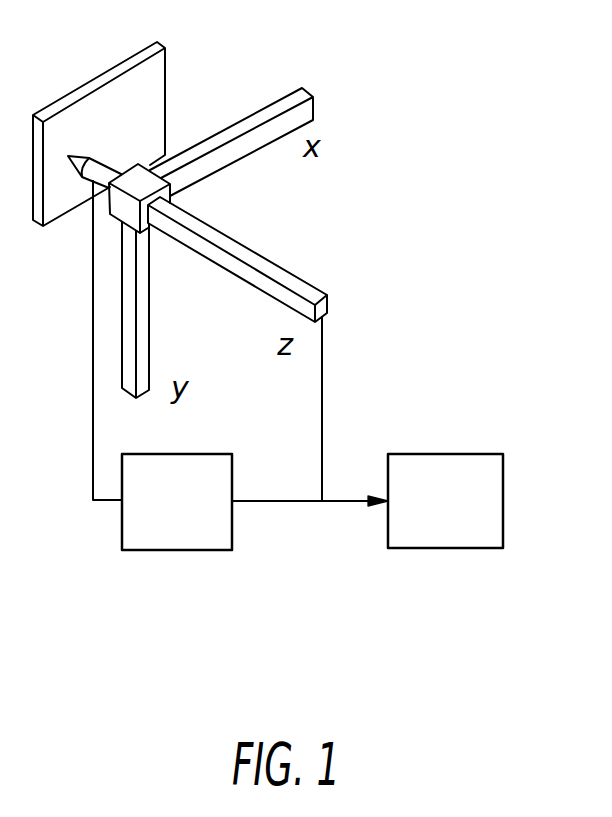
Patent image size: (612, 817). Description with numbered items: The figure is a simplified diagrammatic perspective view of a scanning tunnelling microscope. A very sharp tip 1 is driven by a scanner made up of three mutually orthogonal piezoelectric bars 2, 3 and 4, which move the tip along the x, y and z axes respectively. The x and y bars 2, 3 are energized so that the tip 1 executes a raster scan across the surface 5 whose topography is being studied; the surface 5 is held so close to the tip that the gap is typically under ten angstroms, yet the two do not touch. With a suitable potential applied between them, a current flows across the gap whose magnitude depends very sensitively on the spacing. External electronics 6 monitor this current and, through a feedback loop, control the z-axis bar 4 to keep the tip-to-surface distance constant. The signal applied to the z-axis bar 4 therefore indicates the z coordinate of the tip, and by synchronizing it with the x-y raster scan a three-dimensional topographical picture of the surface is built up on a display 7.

The tip 1 is at (85, 162).
The piezoelectric bar 2 is at (294, 100).
The piezoelectric bar 3 is at (143, 345).
The piezoelectric bar 4 is at (302, 288).
The surface 5 is at (78, 115).
The external electronics 6 is at (195, 530).
The display 7 is at (465, 520).